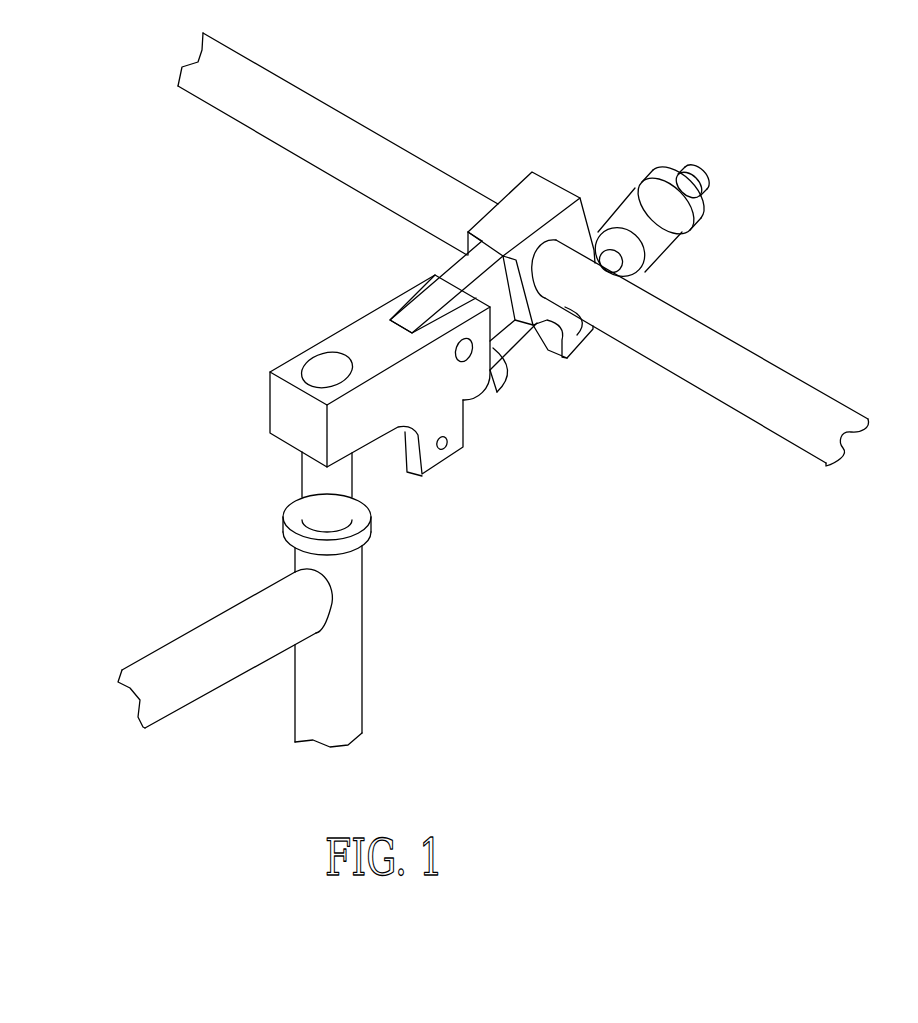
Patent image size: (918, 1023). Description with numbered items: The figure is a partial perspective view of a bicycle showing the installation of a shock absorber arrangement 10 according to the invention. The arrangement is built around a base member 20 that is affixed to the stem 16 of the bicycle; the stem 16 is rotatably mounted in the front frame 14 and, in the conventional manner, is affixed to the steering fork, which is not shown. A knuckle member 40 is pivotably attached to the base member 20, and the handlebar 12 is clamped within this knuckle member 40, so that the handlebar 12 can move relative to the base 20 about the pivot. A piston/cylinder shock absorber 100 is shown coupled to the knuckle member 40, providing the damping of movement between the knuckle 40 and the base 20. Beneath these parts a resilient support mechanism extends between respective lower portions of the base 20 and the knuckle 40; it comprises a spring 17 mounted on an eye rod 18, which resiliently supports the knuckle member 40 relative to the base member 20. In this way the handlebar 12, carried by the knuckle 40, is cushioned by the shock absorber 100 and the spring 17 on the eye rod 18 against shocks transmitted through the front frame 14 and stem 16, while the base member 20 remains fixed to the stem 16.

The shock absorber arrangement 10 is at (342, 263).
The handlebar 12 is at (335, 110).
The front frame 14 is at (181, 592).
The stem 16 is at (300, 468).
The spring 17 is at (530, 372).
The eye rod 18 is at (480, 397).
The base member 20 is at (270, 405).
The knuckle member 40 is at (512, 188).
The piston/cylinder shock absorber 100 is at (622, 207).